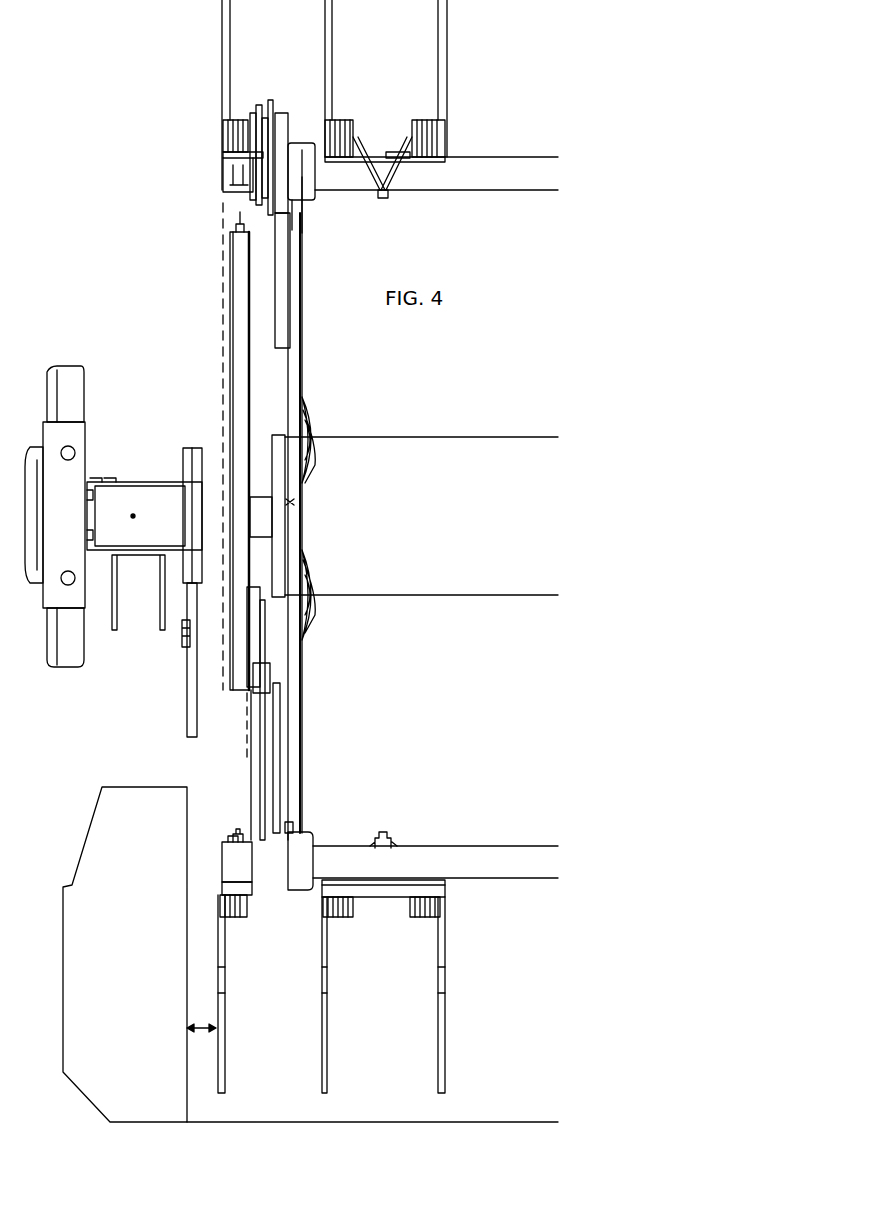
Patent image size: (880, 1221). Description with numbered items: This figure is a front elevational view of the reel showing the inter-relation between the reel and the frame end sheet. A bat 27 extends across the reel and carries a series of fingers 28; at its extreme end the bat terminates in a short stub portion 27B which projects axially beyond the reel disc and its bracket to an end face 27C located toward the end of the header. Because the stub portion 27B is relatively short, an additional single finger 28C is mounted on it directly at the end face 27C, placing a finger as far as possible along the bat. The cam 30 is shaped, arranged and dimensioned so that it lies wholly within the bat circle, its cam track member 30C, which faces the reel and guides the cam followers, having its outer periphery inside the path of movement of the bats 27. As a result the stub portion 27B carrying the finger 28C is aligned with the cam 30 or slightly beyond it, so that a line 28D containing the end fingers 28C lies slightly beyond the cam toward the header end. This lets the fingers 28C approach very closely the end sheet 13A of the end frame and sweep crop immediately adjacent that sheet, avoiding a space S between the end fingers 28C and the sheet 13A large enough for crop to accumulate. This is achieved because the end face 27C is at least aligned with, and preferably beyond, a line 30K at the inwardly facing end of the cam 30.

The end sheet 13A is at (185, 930).
The bat 27 is at (508, 853).
The stub portion 27B is at (238, 840).
The end face 27C is at (222, 858).
The finger 28 is at (443, 973).
The single finger 28C is at (228, 983).
The line containing the end fingers 28D is at (222, 320).
The cam 30 is at (238, 255).
The cam track member 30C is at (242, 232).
The line at the inwardly facing end of the cam 30K is at (247, 732).
The space S is at (187, 1023).